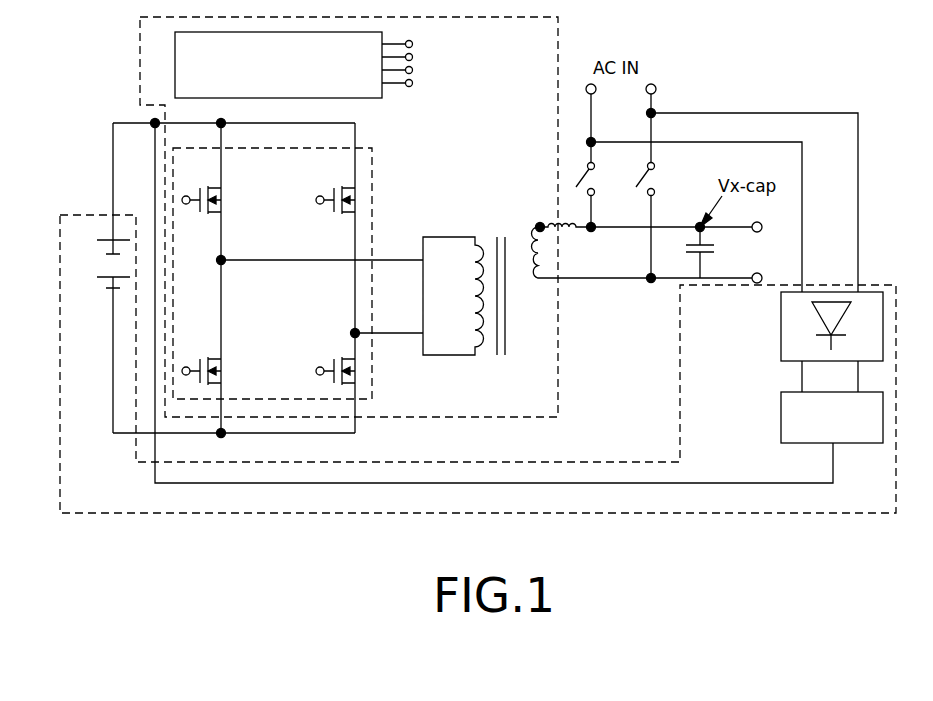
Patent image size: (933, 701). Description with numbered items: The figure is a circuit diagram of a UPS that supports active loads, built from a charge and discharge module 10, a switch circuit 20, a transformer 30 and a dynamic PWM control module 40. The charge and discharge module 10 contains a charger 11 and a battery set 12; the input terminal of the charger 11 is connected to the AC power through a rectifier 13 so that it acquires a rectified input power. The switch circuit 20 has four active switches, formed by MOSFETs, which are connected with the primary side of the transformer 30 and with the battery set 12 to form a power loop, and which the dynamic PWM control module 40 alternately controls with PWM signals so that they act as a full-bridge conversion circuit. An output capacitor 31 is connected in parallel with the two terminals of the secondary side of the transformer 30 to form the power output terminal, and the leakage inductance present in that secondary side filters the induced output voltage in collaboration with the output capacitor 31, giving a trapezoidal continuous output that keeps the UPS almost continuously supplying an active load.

The charge and discharge module 10 is at (680, 383).
The charger 11 is at (797, 443).
The battery set 12 is at (101, 278).
The rectifier 13 is at (793, 313).
The switch circuit 20 is at (375, 225).
The transformer 30 is at (587, 276).
The output capacitor 31 is at (715, 251).
The dynamic PWM control module 40 is at (176, 59).